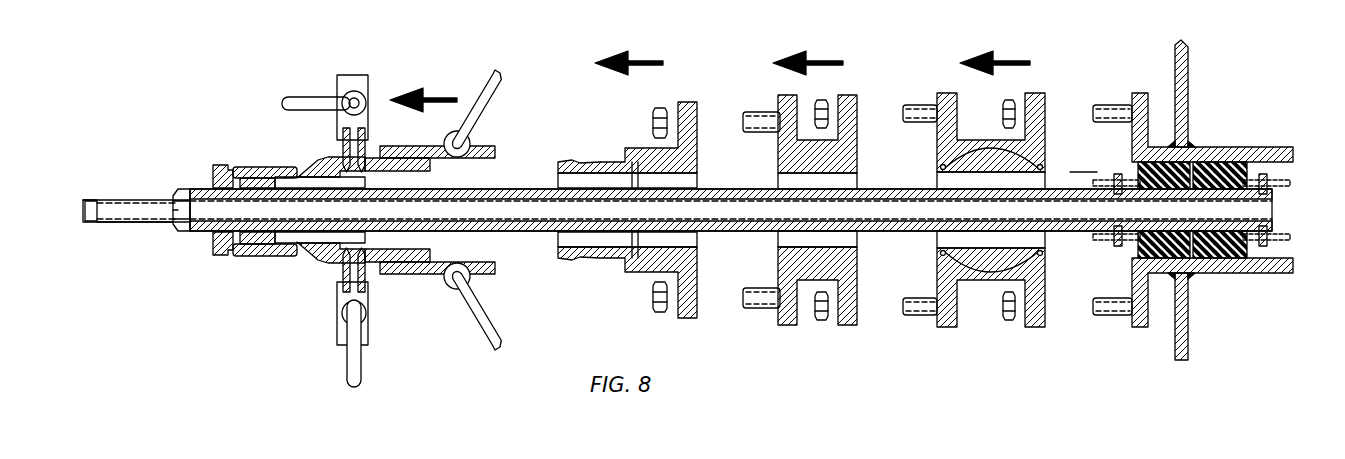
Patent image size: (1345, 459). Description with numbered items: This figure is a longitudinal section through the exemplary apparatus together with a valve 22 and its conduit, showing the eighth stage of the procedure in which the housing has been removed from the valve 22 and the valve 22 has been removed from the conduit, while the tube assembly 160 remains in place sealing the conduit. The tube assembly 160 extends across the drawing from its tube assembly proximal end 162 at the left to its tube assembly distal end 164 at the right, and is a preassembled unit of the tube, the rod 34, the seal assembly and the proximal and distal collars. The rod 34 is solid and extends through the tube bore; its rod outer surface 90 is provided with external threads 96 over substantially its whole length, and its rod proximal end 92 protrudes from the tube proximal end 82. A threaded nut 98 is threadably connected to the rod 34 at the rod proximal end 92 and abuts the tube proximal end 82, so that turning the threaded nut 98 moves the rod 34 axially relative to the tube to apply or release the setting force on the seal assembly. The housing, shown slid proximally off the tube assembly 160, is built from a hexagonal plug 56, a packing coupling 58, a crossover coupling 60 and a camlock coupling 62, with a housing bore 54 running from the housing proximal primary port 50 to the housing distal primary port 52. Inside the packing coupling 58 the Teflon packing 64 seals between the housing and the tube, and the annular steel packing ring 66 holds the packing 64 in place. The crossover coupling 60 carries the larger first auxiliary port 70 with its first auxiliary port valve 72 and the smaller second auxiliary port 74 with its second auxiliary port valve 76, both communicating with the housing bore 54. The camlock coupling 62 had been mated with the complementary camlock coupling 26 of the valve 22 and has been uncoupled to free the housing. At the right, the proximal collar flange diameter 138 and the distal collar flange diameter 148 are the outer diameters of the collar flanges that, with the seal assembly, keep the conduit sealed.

The valve 22 is at (990, 320).
The complementary camlock coupling 26 is at (600, 260).
The rod 34 is at (139, 200).
The housing proximal primary port 50 is at (318, 168).
The housing distal primary port 52 is at (485, 173).
The housing bore 54 is at (388, 235).
The hexagonal plug 56 is at (217, 251).
The packing coupling 58 is at (255, 257).
The crossover coupling 60 is at (323, 256).
The camlock coupling 62 is at (416, 275).
The packing 64 is at (262, 177).
The packing ring 66 is at (252, 167).
The first auxiliary port 70 is at (338, 276).
The first auxiliary port valve 72 is at (335, 336).
The second auxiliary port 74 is at (343, 150).
The second auxiliary port valve 76 is at (340, 90).
The tube proximal end 82 is at (219, 166).
The rod outer surface 90 is at (115, 223).
The rod proximal end 92 is at (93, 200).
The external threads 96 is at (145, 223).
The threaded nut 98 is at (179, 189).
The proximal collar flange diameter 138 is at (1082, 172).
The distal collar flange diameter 148 is at (1312, 173).
The tube assembly 160 is at (762, 232).
The tube assembly proximal end 162 is at (97, 225).
The tube assembly distal end 164 is at (1283, 268).